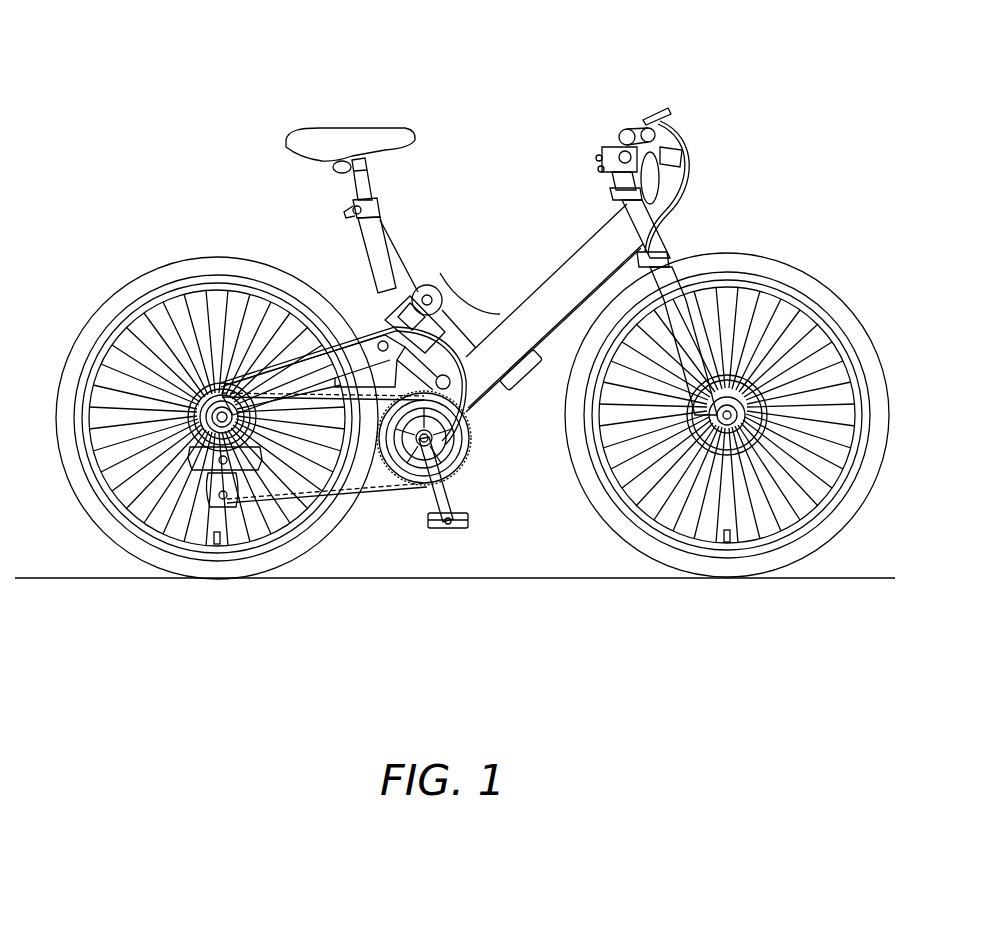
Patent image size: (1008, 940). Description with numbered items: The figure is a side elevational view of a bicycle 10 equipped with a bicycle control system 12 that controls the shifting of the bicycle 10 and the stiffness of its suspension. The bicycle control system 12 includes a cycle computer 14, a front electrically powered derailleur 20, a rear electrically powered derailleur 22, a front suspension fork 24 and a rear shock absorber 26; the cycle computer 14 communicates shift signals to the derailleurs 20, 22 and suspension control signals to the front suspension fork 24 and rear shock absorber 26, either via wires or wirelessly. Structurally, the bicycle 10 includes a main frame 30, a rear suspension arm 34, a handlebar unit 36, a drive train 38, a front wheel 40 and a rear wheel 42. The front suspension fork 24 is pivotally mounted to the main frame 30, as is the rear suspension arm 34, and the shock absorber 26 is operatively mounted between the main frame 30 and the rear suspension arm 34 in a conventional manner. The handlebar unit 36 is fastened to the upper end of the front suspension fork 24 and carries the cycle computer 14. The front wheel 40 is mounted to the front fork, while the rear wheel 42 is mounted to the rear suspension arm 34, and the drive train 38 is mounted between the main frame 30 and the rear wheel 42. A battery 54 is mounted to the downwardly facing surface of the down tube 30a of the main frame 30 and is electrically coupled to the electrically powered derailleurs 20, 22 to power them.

The bicycle 10 is at (663, 78).
The bicycle control system 12 is at (622, 128).
The cycle computer 14 is at (655, 110).
The front electrically powered derailleur 20 is at (497, 314).
The rear electrically powered derailleur 22 is at (207, 470).
The front suspension fork 24 is at (718, 287).
The rear shock absorber 26 is at (372, 307).
The main frame 30 is at (425, 253).
The down tube 30a is at (580, 242).
The rear suspension arm 34 is at (310, 368).
The handlebar unit 36 is at (643, 118).
The drive train 38 is at (470, 504).
The front wheel 40 is at (805, 288).
The rear wheel 42 is at (170, 262).
The battery 54 is at (528, 400).